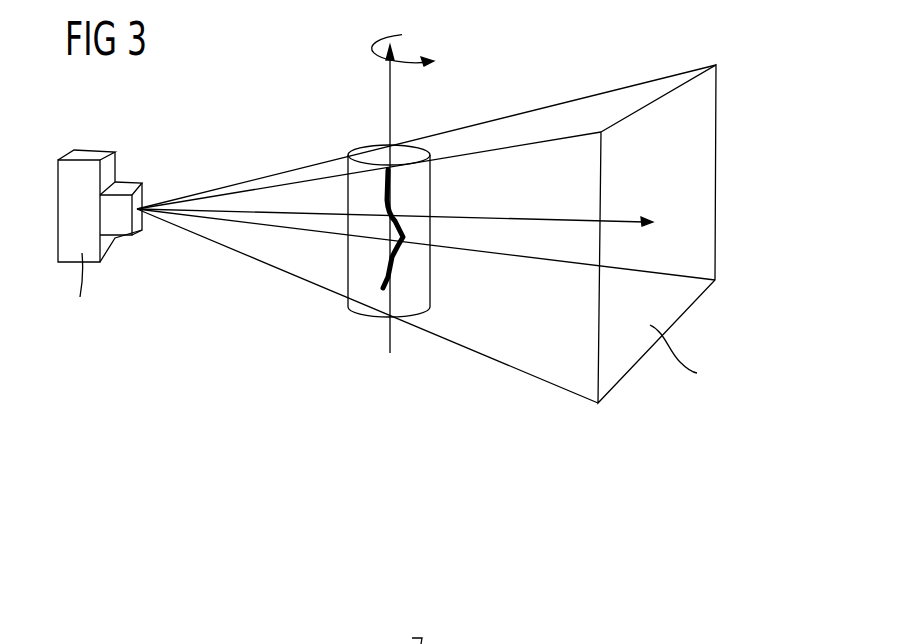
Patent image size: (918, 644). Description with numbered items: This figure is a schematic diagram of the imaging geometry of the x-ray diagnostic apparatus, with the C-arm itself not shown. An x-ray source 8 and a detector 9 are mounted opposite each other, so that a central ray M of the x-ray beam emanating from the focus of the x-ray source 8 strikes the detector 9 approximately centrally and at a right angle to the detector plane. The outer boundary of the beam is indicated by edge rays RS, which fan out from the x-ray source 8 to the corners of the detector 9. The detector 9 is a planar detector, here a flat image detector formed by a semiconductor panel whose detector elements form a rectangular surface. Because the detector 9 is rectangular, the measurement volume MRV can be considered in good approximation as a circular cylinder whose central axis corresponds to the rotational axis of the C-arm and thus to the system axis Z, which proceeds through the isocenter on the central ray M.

The x-ray source 8 is at (87, 172).
The detector 9 is at (708, 168).
The edge rays RS is at (555, 140).
The central ray M is at (533, 217).
The system axis Z is at (388, 117).
The element MRV is at (353, 272).